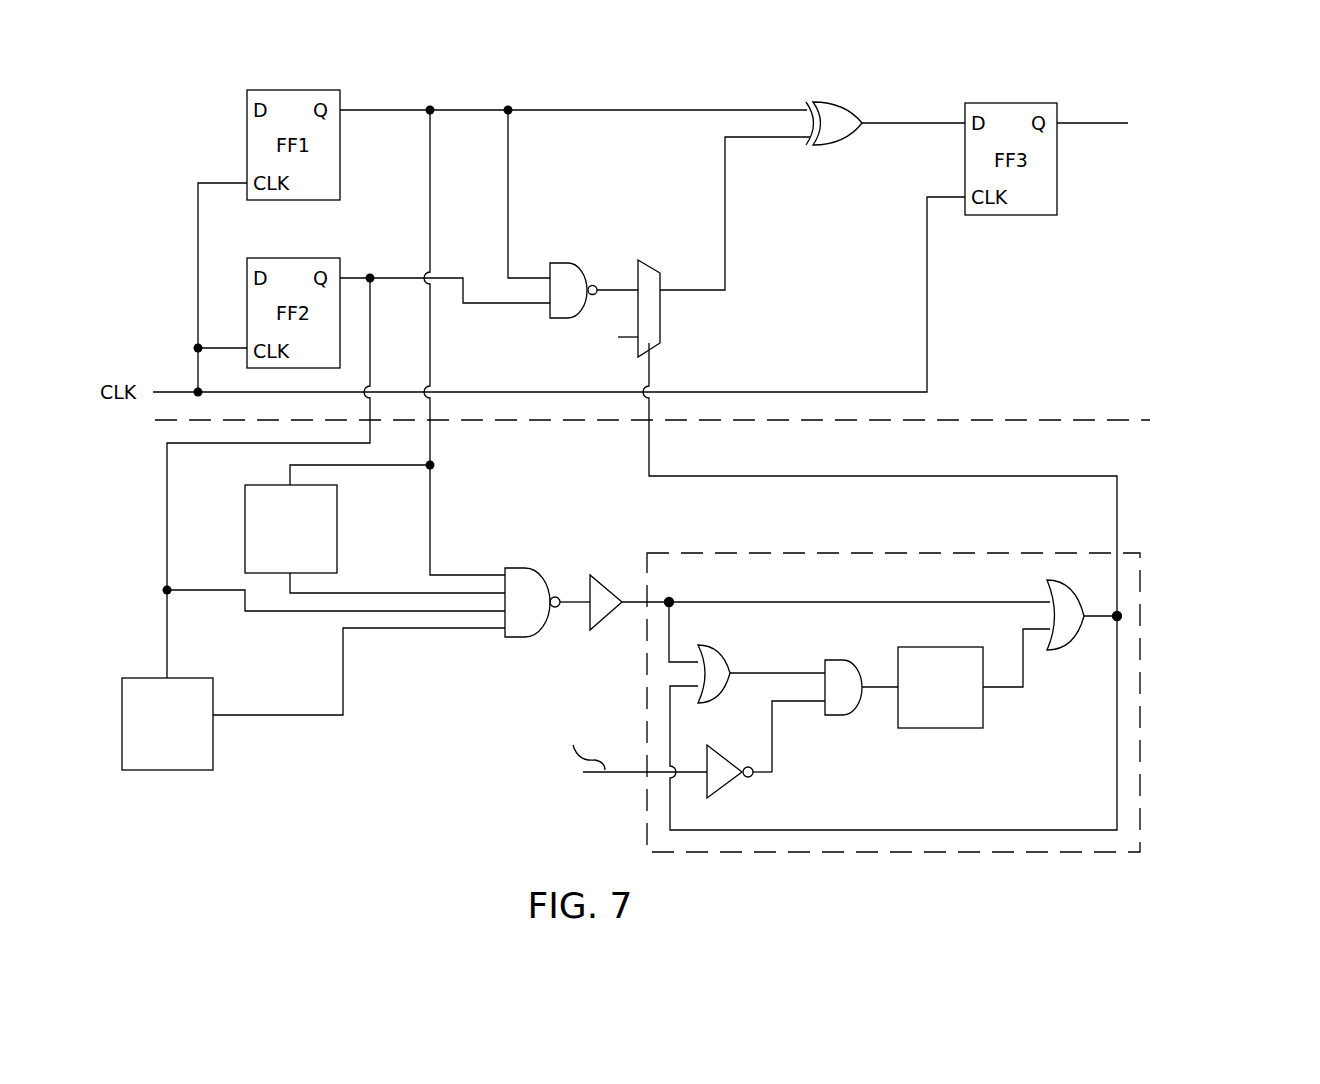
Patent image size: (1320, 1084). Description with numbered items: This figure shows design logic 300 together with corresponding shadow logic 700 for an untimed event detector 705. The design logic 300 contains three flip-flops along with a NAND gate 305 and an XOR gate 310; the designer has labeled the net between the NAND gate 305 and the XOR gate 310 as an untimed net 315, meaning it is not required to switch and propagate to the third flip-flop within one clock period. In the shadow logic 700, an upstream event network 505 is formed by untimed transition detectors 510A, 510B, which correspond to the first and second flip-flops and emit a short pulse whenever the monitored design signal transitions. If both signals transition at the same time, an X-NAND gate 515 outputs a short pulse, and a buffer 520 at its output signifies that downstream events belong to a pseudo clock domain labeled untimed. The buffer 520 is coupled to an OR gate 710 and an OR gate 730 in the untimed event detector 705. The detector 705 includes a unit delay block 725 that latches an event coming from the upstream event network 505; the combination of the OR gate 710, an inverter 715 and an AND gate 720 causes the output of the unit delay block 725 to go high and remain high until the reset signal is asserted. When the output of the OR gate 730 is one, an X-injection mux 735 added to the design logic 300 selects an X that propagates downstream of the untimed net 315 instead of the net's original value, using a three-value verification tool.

The design logic 300 is at (1157, 415).
The NAND gate 305 is at (560, 263).
The XOR gate 310 is at (826, 148).
The untimed net 315 is at (725, 172).
The upstream event network 505 is at (615, 800).
The untimed transition detector 510A is at (375, 529).
The untimed transition detector 510B is at (313, 680).
The X-NAND gate 515 is at (518, 568).
The buffer 520 is at (605, 575).
The shadow logic 700 is at (1157, 870).
The untimed event detector 705 is at (1140, 755).
The OR gate 710 is at (724, 656).
The inverter 715 is at (720, 787).
The AND gate 720 is at (855, 660).
The unit delay block 725 is at (917, 713).
The OR gate 730 is at (1053, 580).
The X-injection mux 735 is at (660, 318).